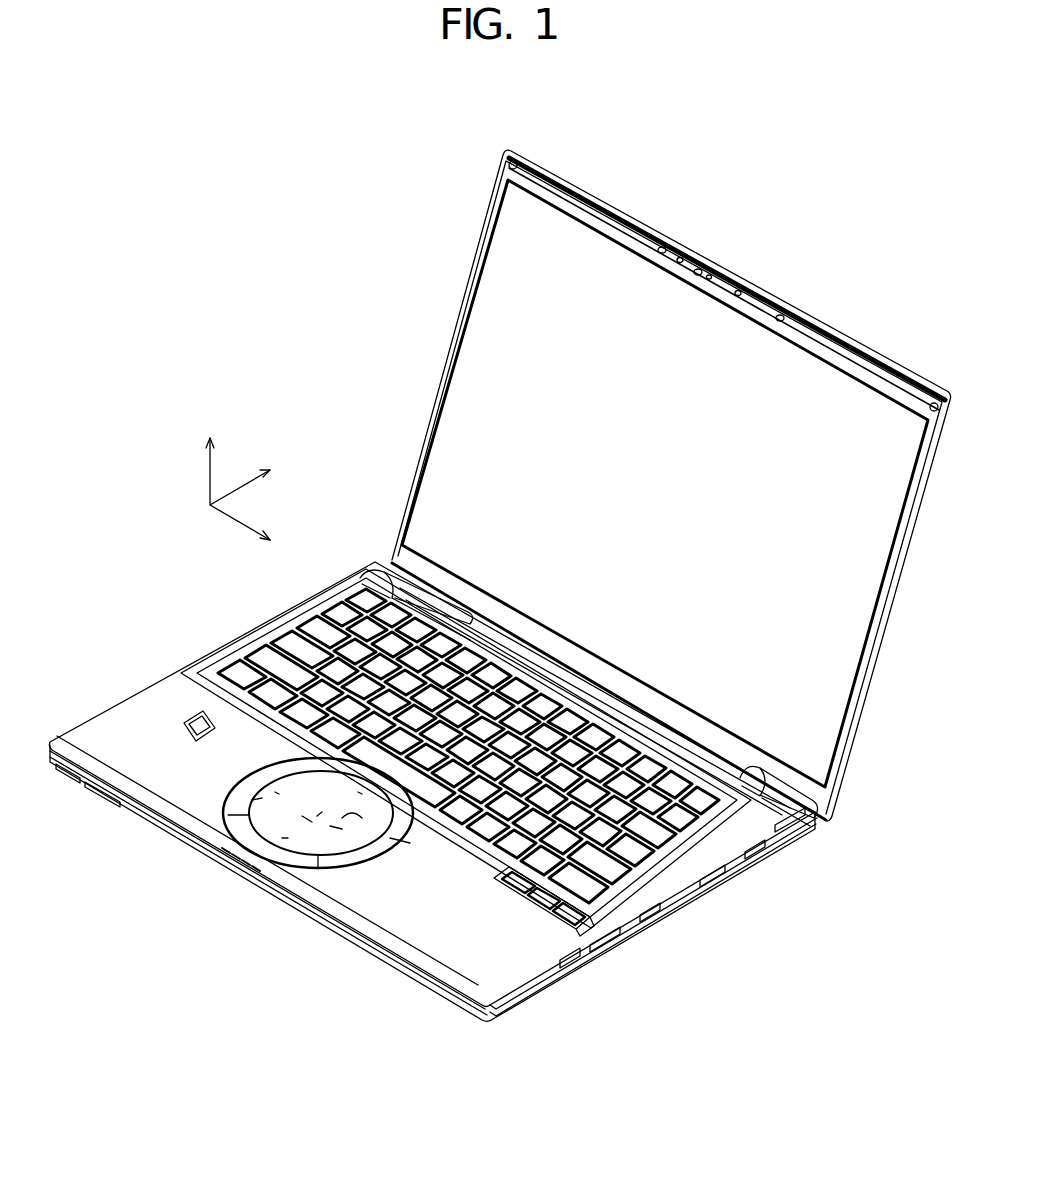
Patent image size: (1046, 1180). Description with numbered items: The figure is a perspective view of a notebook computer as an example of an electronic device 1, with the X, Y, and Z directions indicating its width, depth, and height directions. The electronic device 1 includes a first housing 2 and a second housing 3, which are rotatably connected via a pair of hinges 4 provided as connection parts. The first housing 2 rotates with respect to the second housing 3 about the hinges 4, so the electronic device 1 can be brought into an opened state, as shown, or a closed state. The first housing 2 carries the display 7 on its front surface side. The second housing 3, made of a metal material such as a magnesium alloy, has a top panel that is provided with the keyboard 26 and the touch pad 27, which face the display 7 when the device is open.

The electronic device 1 is at (305, 338).
The first housing 2 is at (663, 485).
The second housing 3 is at (465, 749).
The hinges 4 is at (433, 597).
The display 7 is at (512, 348).
The keyboard 26 is at (262, 652).
The touch pad 27 is at (275, 817).